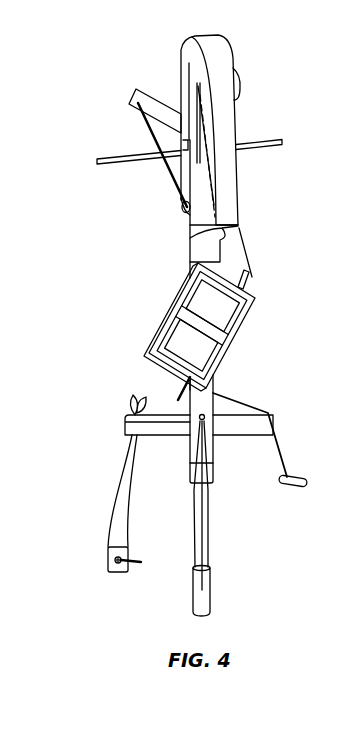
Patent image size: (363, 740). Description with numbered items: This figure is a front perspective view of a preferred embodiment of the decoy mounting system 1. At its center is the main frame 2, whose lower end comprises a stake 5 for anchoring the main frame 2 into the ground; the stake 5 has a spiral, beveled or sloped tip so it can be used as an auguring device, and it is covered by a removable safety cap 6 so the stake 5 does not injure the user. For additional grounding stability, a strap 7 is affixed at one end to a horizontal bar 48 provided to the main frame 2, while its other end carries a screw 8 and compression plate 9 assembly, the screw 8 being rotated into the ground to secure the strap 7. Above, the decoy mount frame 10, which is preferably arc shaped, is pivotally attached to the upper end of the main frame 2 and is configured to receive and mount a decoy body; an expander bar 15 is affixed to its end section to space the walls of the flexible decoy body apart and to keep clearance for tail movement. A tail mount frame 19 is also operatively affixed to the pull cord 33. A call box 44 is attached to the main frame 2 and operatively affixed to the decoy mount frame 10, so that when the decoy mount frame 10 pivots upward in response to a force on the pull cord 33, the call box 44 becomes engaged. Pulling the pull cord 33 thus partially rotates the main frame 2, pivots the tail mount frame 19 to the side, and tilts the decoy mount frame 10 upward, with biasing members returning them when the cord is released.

The decoy mounting system 1 is at (289, 76).
The decoy mount frame 10 is at (229, 128).
The tail mount frame 19 is at (131, 93).
The expander bar 15 is at (108, 157).
The call box 44 is at (243, 323).
The horizontal bar 48 is at (160, 416).
The main frame 2 is at (214, 447).
The pull cord 33 is at (290, 446).
The strap 7 is at (113, 505).
The compression plate 9 is at (108, 558).
The screw 8 is at (133, 568).
The stake 5 is at (204, 540).
The removable safety cap 6 is at (208, 593).